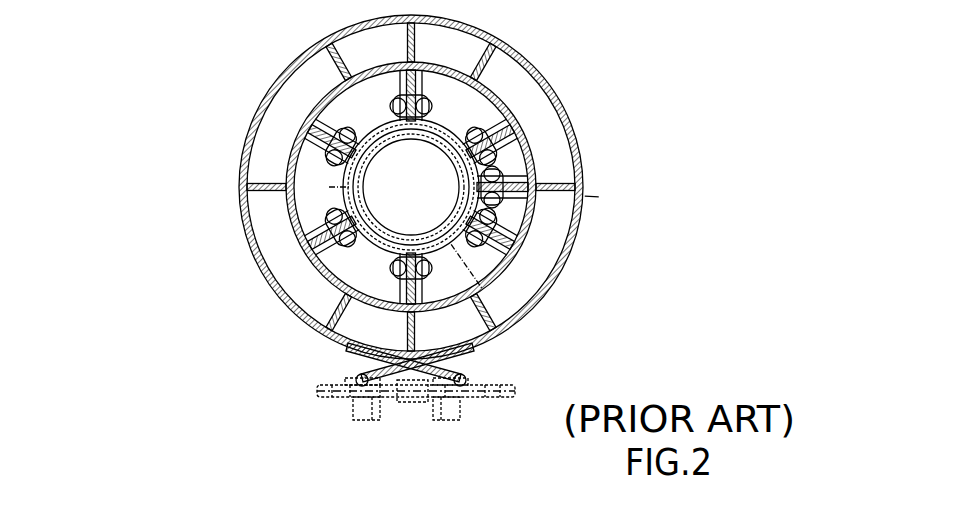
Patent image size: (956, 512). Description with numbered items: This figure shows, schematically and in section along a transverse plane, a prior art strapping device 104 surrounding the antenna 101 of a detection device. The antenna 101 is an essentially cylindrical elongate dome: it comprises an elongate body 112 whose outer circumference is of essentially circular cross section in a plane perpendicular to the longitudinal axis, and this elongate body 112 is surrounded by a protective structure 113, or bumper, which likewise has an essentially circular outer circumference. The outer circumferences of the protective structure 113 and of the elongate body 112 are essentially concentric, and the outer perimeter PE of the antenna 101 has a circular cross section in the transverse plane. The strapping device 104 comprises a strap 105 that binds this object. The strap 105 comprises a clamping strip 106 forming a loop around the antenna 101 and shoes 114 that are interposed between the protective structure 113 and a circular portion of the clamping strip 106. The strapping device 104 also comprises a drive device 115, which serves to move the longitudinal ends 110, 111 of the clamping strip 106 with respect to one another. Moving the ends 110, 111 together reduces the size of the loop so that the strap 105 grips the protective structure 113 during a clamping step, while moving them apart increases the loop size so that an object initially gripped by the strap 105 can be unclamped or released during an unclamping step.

The antenna 101 is at (548, 80).
The prior art strapping device 104 is at (162, 103).
The strap 105 is at (202, 185).
The clamping strip 106 is at (270, 295).
The longitudinal end of the clamping strip 110 is at (356, 381).
The longitudinal end of the clamping strip 111 is at (466, 378).
The elongate body 112 is at (375, 148).
The protective structure 113 is at (578, 186).
The shoes 114 is at (240, 253).
The drive device 115 is at (405, 424).
The outer perimeter PE is at (588, 150).